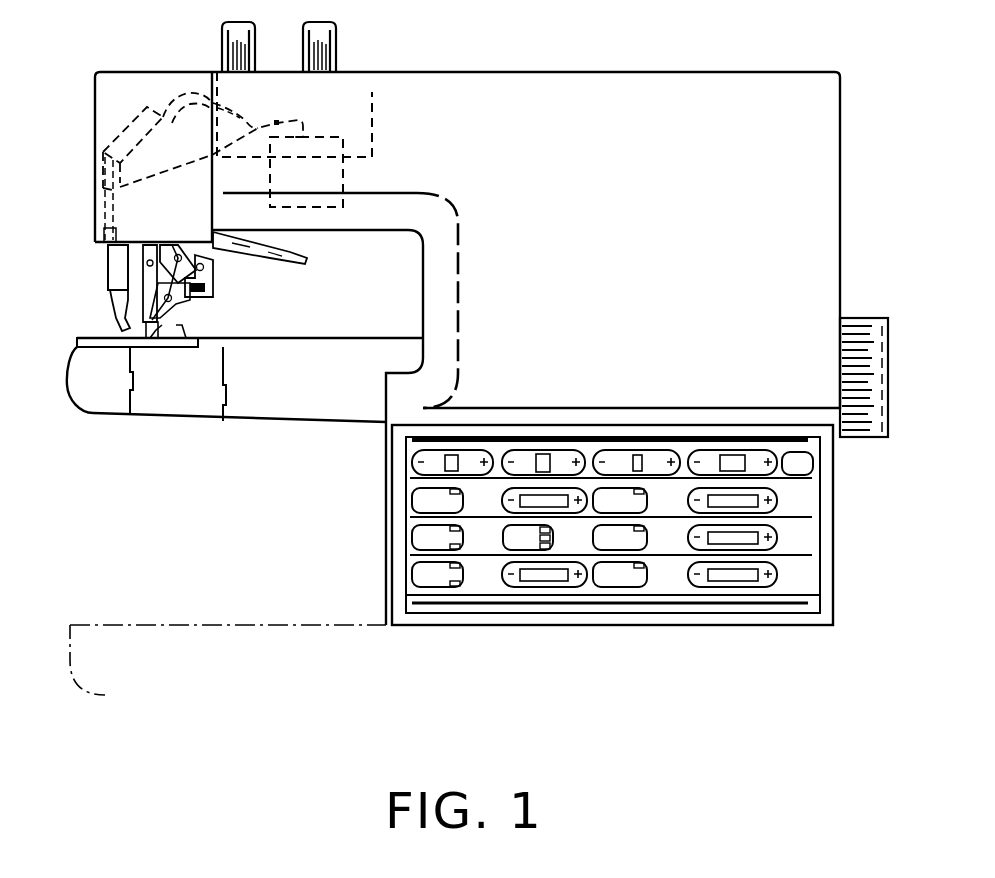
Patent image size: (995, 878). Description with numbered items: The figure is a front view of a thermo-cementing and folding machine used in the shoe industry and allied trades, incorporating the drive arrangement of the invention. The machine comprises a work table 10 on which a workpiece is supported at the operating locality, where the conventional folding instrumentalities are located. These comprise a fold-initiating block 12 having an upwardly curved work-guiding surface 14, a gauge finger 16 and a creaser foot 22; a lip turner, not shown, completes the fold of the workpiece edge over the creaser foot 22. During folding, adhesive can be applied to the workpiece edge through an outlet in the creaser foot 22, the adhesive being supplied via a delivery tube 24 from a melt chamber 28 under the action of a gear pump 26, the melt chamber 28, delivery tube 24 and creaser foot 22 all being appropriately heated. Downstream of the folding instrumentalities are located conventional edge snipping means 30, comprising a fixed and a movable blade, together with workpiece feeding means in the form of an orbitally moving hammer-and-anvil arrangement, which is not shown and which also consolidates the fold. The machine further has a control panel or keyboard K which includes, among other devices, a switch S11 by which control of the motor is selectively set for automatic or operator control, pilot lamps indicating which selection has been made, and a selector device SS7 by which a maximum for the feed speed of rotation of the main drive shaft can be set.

The work table 10 is at (320, 336).
The fold-initiating block 12 is at (165, 316).
The work-guiding surface 14 is at (147, 330).
The gauge finger 16 is at (147, 277).
The creaser foot 22 is at (128, 308).
The delivery tube 24 is at (103, 188).
The gear pump 26 is at (343, 175).
The melt chamber 28 is at (372, 92).
The edge snipping means 30 is at (180, 304).
The switch S11 is at (420, 574).
The control panel or keyboard K is at (547, 568).
The selector device SS7 is at (513, 578).